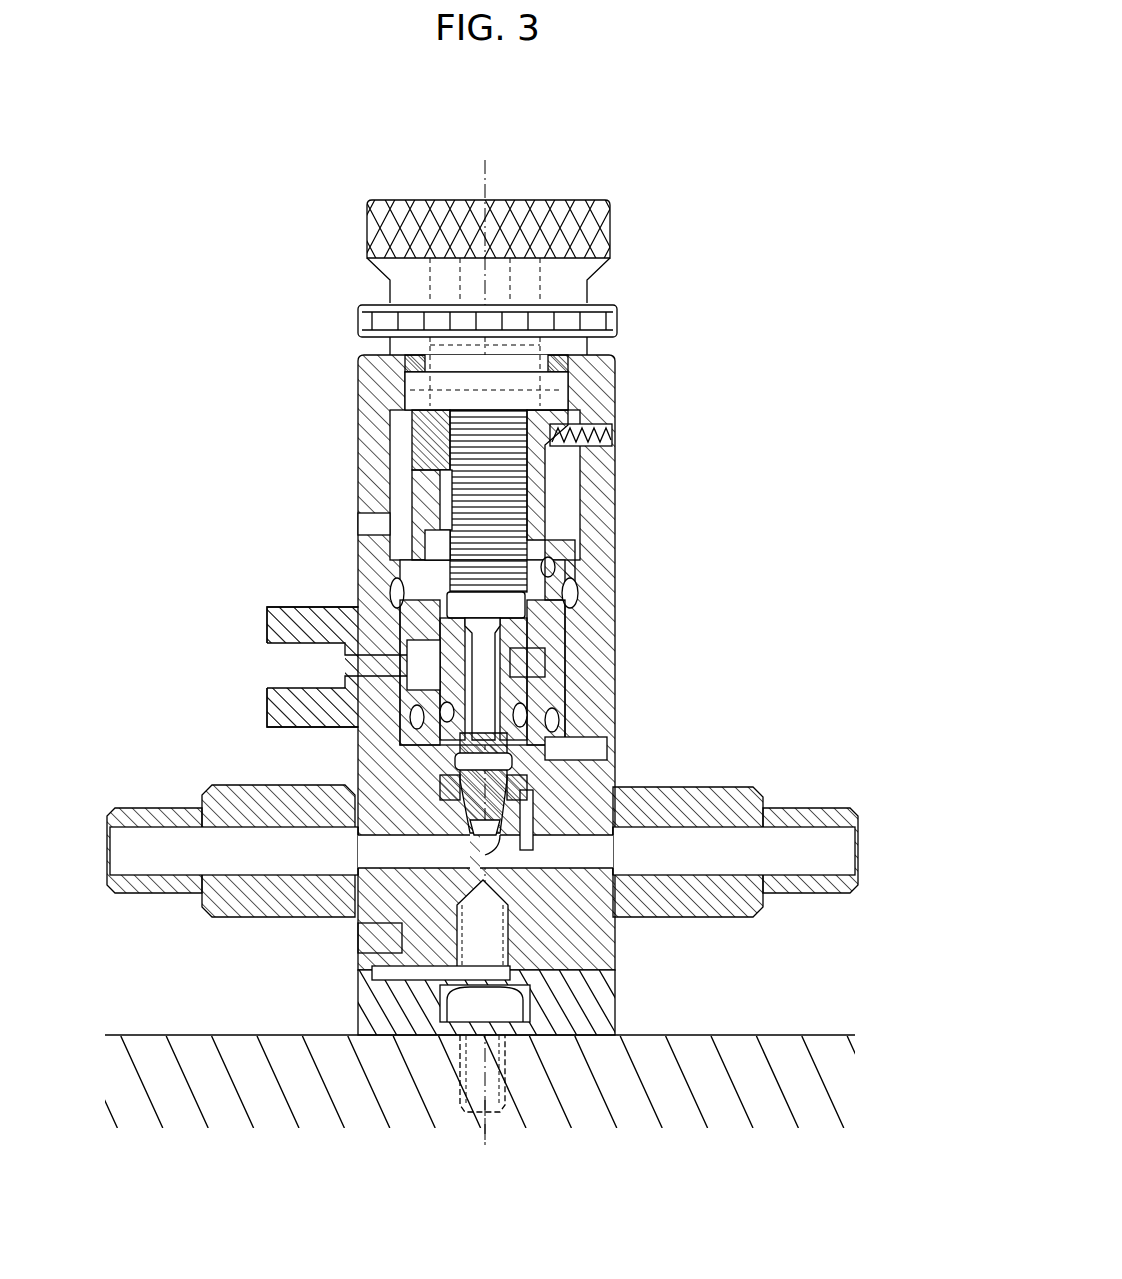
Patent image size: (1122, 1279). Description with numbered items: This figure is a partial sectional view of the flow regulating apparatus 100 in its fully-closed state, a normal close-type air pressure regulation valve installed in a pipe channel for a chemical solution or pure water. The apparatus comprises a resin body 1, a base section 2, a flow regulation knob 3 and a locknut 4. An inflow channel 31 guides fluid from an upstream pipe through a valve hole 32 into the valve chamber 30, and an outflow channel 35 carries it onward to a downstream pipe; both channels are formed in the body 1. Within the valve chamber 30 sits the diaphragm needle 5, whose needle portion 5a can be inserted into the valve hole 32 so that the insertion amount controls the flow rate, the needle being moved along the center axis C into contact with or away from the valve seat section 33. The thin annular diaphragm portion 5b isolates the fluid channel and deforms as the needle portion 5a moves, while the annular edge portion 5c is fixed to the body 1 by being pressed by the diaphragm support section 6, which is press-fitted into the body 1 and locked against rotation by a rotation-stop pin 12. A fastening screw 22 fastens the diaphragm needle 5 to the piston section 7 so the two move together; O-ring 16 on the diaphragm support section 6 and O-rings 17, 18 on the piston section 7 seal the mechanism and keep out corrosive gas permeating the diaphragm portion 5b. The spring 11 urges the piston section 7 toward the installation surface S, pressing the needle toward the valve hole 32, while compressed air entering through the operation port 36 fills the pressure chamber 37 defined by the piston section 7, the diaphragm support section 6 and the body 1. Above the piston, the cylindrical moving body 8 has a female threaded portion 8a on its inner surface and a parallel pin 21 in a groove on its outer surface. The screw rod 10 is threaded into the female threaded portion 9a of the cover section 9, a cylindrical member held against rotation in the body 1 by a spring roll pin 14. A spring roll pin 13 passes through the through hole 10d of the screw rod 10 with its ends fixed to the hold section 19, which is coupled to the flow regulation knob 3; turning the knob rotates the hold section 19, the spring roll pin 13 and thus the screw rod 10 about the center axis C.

The flow regulating apparatus 100 is at (645, 125).
The body 1 is at (615, 690).
The base section 2 is at (615, 1010).
The flow regulation knob 3 is at (405, 200).
The locknut 4 is at (358, 320).
The diaphragm needle 5 is at (470, 815).
The needle portion 5a is at (480, 840).
The diaphragm portion 5b is at (455, 800).
The annular edge portion 5c is at (455, 765).
The diaphragm support section 6 is at (545, 700).
The piston section 7 is at (552, 572).
The moving body 8 is at (527, 525).
The female threaded portion 8a is at (437, 540).
The cover section 9 is at (410, 400).
The female threaded portion 9a is at (448, 488).
The screw rod 10 is at (560, 400).
The through hole 10d is at (495, 357).
The spring 11 is at (420, 455).
The rotation-stop pin 12 is at (600, 755).
The spring roll pin 13 is at (405, 365).
The spring roll pin 14 is at (612, 433).
The O-ring 16 is at (410, 720).
The O-ring 17 is at (415, 712).
The O-ring 18 is at (577, 600).
The hold section 19 is at (520, 272).
The parallel pin 21 is at (560, 545).
The fastening screw 22 is at (500, 624).
The valve chamber 30 is at (532, 790).
The inflow channel 31 is at (145, 850).
The valve hole 32 is at (495, 845).
The valve seat section 33 is at (450, 838).
The outflow channel 35 is at (805, 865).
The operation port 36 is at (290, 667).
The pressure chamber 37 is at (385, 630).
The installation surface S is at (482, 1081).
The center axis C is at (496, 1128).